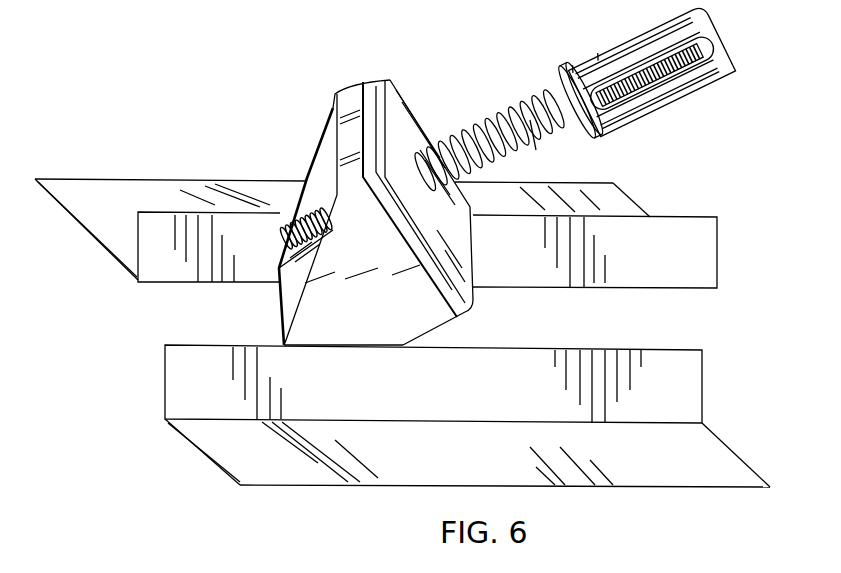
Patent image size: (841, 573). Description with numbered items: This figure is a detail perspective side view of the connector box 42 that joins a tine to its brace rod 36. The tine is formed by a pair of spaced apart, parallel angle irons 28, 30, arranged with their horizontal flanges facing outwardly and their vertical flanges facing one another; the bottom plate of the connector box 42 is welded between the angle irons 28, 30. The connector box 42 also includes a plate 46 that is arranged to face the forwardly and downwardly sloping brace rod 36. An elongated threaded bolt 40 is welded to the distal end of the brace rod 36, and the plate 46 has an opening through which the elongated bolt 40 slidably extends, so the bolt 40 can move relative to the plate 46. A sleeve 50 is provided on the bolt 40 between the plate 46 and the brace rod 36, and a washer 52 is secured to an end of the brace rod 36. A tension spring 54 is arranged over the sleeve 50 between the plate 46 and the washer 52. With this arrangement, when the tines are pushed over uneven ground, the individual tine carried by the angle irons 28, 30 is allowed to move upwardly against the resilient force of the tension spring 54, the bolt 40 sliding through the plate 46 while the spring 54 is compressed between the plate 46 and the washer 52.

The angle iron 28 is at (197, 178).
The angle iron 30 is at (722, 454).
The brace rod 36 is at (651, 69).
The elongated threaded bolt 40 is at (490, 142).
The connector box 42 is at (355, 72).
The plate 46 is at (403, 120).
The sleeve 50 is at (490, 140).
The washer 52 is at (580, 100).
The tension spring 54 is at (507, 157).